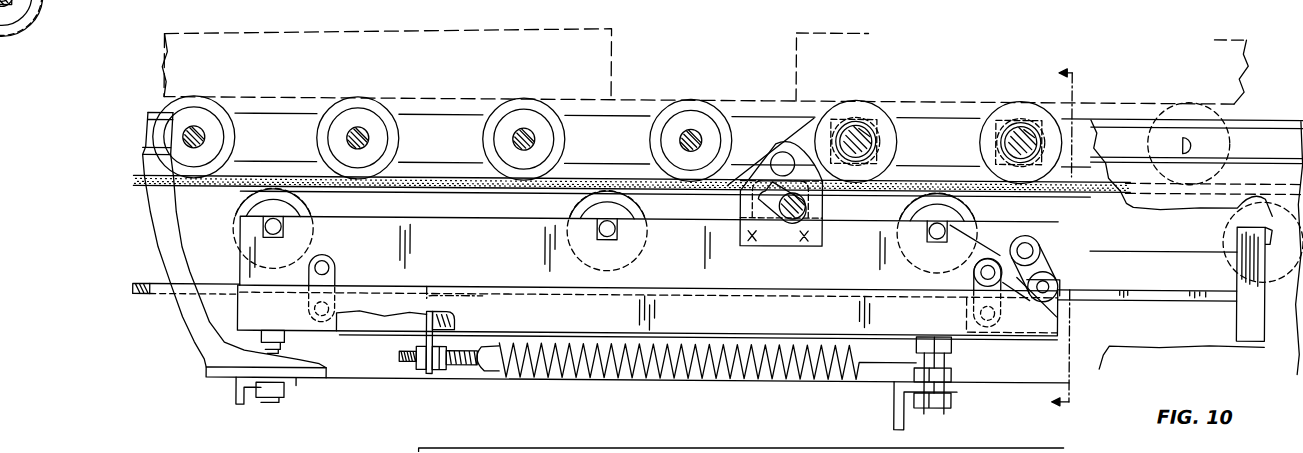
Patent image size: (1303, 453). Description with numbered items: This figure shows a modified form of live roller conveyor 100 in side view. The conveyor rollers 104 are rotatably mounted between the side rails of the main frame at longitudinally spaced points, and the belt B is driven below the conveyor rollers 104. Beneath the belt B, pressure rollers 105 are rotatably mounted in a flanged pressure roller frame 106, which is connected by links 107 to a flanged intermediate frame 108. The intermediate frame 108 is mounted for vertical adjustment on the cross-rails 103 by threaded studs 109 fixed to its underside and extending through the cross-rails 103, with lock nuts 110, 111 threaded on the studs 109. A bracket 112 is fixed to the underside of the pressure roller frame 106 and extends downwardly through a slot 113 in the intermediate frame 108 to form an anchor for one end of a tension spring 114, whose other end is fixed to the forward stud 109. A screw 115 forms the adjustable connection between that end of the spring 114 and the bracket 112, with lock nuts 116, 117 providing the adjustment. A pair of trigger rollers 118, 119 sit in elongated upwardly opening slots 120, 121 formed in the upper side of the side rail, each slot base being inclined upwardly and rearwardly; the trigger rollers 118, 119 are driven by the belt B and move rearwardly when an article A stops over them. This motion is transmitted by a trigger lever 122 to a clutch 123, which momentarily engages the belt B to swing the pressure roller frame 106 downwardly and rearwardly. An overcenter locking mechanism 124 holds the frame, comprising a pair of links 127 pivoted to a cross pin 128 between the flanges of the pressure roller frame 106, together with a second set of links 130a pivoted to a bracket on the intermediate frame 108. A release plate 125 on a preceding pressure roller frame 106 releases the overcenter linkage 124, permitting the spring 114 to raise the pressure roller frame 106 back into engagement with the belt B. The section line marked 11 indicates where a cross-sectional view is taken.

The live roller conveyor 100 is at (644, 100).
The cross-rails 103 is at (248, 400).
The conveyor rollers 104 is at (528, 100).
The pressure rollers 105 is at (308, 206).
The pressure roller frame 106 is at (478, 226).
The links 107 is at (334, 278).
The intermediate frame 108 is at (392, 296).
The threaded studs 109 is at (286, 345).
The lock nut 110 is at (950, 376).
The lock nut 111 is at (953, 402).
The bracket 112 is at (452, 340).
The slot 113 is at (363, 333).
The tension spring 114 is at (637, 373).
The screw 115 is at (460, 368).
The lock nut 116 is at (438, 372).
The lock nut 117 is at (408, 372).
The trigger roller 118 is at (864, 107).
The trigger roller 119 is at (1012, 104).
The slot 120 is at (838, 118).
The slot 121 is at (1000, 120).
The trigger lever 122 is at (793, 142).
The clutch 123 is at (755, 152).
The overcenter locking mechanism 124 is at (1028, 238).
The release plate 125 is at (198, 286).
The links 127 is at (996, 255).
The cross pin 128 is at (974, 265).
The second set of links 130a is at (1055, 262).
The section line 11 is at (1051, 230).
The article A is at (874, 42).
The belt B is at (565, 179).